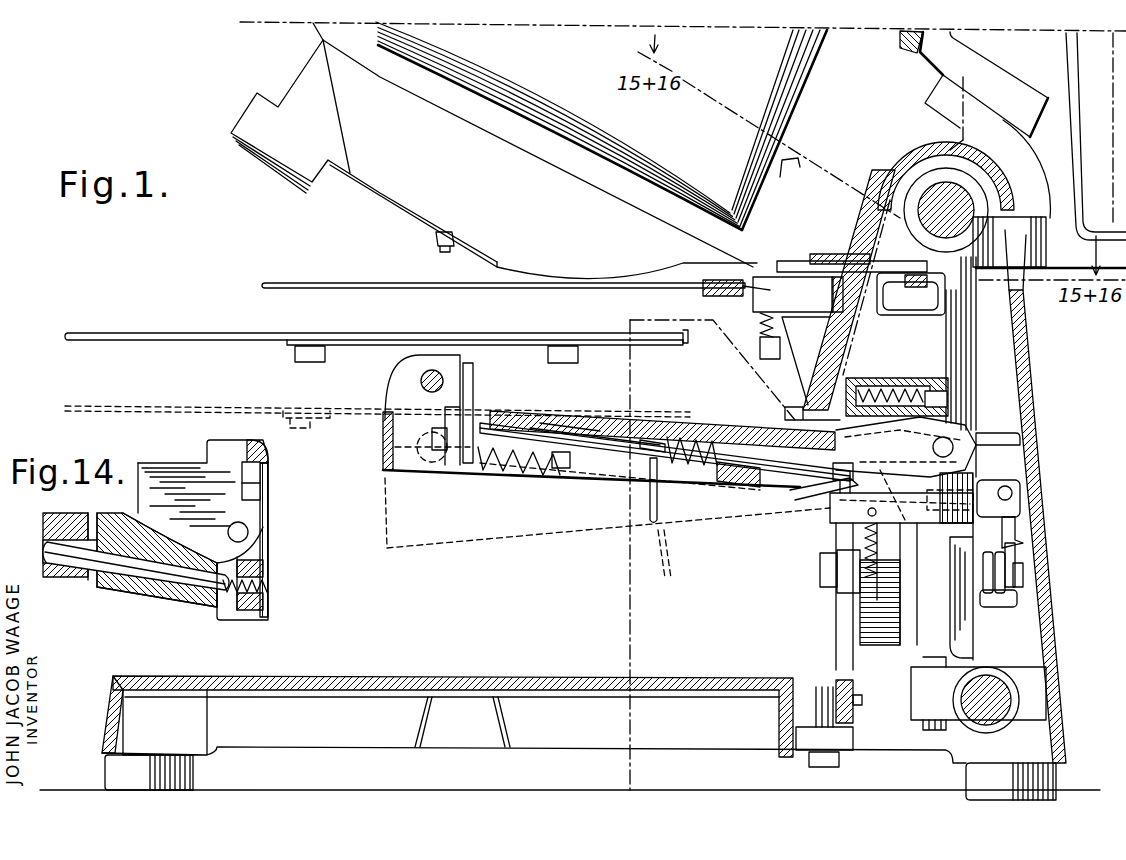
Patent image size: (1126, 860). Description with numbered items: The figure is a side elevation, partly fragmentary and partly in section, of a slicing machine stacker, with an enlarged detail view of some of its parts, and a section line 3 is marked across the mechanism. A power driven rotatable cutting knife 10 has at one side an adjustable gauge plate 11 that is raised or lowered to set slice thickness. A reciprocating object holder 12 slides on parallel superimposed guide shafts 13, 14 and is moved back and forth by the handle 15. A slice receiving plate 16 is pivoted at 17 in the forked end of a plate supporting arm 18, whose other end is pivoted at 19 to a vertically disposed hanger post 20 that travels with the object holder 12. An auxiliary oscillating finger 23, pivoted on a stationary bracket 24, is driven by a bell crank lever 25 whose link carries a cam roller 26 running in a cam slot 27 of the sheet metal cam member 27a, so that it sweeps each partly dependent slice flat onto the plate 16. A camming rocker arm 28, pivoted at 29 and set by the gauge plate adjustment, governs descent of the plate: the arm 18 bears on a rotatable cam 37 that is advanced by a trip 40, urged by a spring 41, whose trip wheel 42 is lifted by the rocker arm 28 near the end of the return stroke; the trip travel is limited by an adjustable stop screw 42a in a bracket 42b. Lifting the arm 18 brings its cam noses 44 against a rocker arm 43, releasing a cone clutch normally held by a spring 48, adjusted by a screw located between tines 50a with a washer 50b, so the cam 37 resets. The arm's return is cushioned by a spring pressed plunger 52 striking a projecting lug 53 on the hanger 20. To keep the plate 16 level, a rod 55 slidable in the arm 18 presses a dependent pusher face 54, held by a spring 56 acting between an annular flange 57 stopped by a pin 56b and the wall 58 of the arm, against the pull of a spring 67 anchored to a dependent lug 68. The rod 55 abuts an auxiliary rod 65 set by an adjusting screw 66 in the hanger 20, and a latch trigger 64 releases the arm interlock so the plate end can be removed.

In FIG. 1, the section line 3- 3 is at (927, 118).
In FIG. 1, the power driven rotatable cutting knife 10 is at (757, 247).
In FIG. 1, the adjustable gauge plate 11 is at (800, 176).
In FIG. 1, the reciprocating object holder 12 is at (523, 75).
In FIG. 1, the guide shaft 13 is at (952, 215).
In FIG. 1, the guide shaft 14 is at (988, 708).
In FIG. 1, the handle 15 is at (1080, 52).
In FIG. 1, the slice receiving plate 16 is at (225, 332).
In FIG. 1, the pivot point 17 is at (427, 380).
In FIG. 1, the reciprocating plate supporting arm 18 is at (710, 420).
In FIG. 14, the reciprocating plate supporting arm 18 is at (43, 518).
In FIG. 1, the pivot point 19 is at (936, 452).
In FIG. 14, the pivot point 19 is at (245, 533).
In FIG. 1, the hanger post 20 is at (976, 334).
In FIG. 1, the auxiliary oscillating finger 23 is at (378, 283).
In FIG. 1, the stationary bracket 24 is at (793, 341).
In FIG. 1, the bell crank lever 25 is at (748, 262).
In FIG. 1, the cam roller 26 is at (903, 287).
In FIG. 1, the cam slot 27 is at (883, 307).
In FIG. 1, the sheet metal cam member 27a is at (905, 305).
In FIG. 1, the camming rocker arm 28 is at (856, 686).
In FIG. 1, the pivot 29 is at (862, 701).
In FIG. 1, the rotatable cam 37 is at (893, 615).
In FIG. 1, the trip 40 is at (846, 613).
In FIG. 1, the spring 41 is at (873, 540).
In FIG. 1, the trip wheel 42 is at (839, 650).
In FIG. 1, the adjustable stop screw 42a is at (905, 490).
In FIG. 1, the bracket 42b is at (906, 493).
In FIG. 1, the rocker arm 43 is at (1007, 540).
In FIG. 1, the cam noses 44 is at (959, 430).
In FIG. 1, the spring 48 is at (1017, 605).
In FIG. 1, the tines 50a is at (1005, 577).
In FIG. 1, the washer 50b is at (1012, 587).
In FIG. 1, the spring pressed plunger 52 is at (939, 390).
In FIG. 14, the spring pressed plunger 52 is at (250, 478).
In FIG. 1, the projecting lug 53 is at (946, 400).
In FIG. 14, the projecting lug 53 is at (257, 488).
In FIG. 1, the pusher face 54 is at (473, 400).
In FIG. 1, the rod 55 is at (613, 447).
In FIG. 14, the rod 55 is at (78, 568).
In FIG. 1, the spring 56 is at (695, 468).
In FIG. 1, the pin 56b is at (643, 427).
In FIG. 1, the annular flange 57 is at (665, 452).
In FIG. 1, the wall 58 is at (737, 483).
In FIG. 1, the latch trigger 64 is at (657, 500).
In FIG. 1, the auxiliary rod 65 is at (813, 490).
In FIG. 14, the auxiliary rod 65 is at (163, 578).
In FIG. 1, the adjusting screw 66 is at (979, 480).
In FIG. 14, the adjusting screw 66 is at (268, 590).
In FIG. 1, the spring 67 is at (530, 470).
In FIG. 1, the dependent lug 68 is at (567, 473).